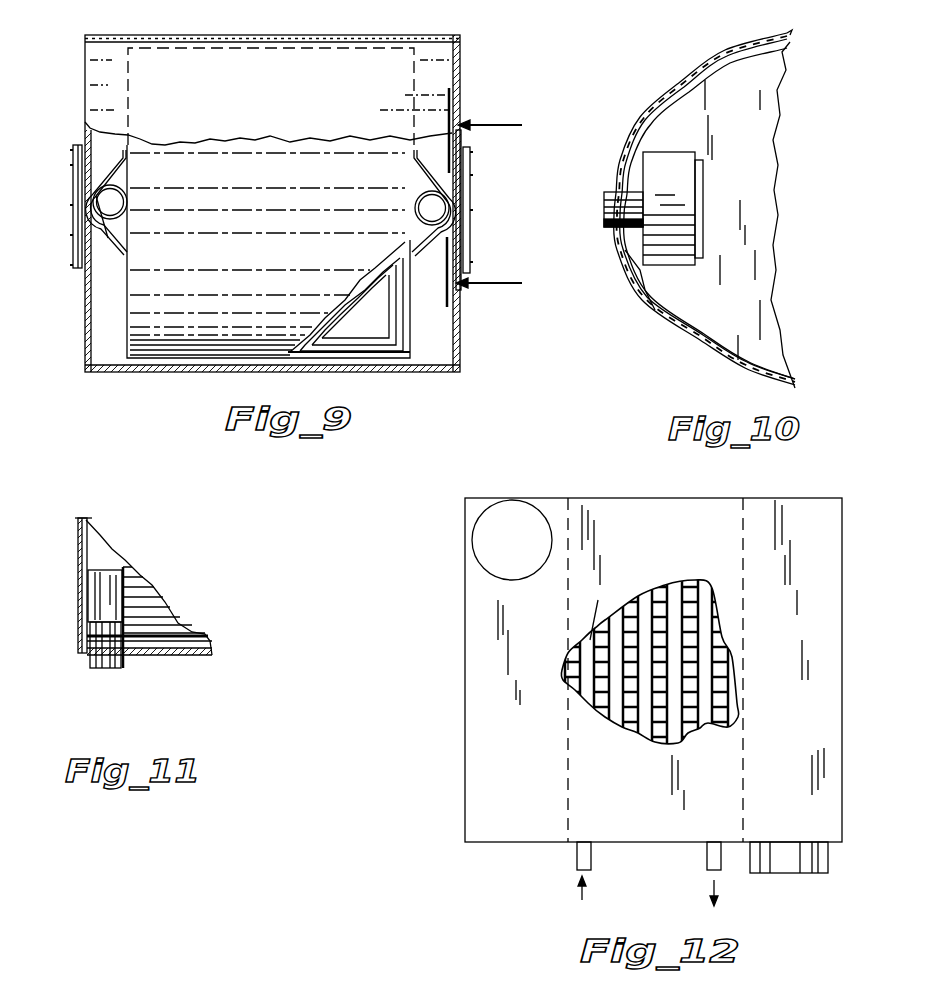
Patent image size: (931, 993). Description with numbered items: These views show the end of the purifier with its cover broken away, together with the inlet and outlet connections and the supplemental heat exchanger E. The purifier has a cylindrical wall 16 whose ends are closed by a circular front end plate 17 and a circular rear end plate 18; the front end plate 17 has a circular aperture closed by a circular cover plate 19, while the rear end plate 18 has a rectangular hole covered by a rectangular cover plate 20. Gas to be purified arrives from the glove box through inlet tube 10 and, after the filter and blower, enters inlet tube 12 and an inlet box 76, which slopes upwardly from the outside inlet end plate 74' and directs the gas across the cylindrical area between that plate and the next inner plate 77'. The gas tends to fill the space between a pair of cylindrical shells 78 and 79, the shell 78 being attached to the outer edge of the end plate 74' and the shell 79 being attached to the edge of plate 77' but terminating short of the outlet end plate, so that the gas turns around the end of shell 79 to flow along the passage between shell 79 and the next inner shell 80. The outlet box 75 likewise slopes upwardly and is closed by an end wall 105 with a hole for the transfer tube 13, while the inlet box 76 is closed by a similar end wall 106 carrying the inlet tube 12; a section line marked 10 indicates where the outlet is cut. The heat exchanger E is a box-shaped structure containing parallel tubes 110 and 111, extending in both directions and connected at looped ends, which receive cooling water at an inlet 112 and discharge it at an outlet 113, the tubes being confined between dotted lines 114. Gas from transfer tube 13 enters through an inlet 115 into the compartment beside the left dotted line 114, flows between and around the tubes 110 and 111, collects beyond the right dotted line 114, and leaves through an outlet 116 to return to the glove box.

In FIG. 9, the inlet tube 10 is at (484, 197).
In FIG. 9, the inlet tube 12 is at (420, 192).
In FIG. 10, the inlet tube 12 is at (612, 230).
In FIG. 9, the transfer tube 13 is at (118, 205).
In FIG. 11, the transfer tube 13 is at (110, 668).
In FIG. 9, the cylindrical wall 16 is at (298, 92).
In FIG. 10, the cylindrical wall 16 is at (662, 336).
In FIG. 11, the cylindrical wall 16 is at (188, 655).
In FIG. 9, the front end plate 17 is at (84, 356).
In FIG. 11, the front end plate 17 is at (88, 537).
In FIG. 9, the rear end plate 18 is at (445, 312).
In FIG. 9, the circular cover plate 19 is at (72, 255).
In FIG. 9, the rectangular cover plate 20 is at (472, 184).
In FIG. 9, the outside inlet end plate 74' is at (401, 315).
In FIG. 10, the outside inlet end plate 74' is at (655, 280).
In FIG. 9, the outlet box 75 is at (470, 240).
In FIG. 10, the outlet box 75 is at (685, 195).
In FIG. 9, the inlet box 76 is at (110, 238).
In FIG. 11, the inlet box 76 is at (112, 565).
In FIG. 9, the next inner plate 77' is at (409, 307).
In FIG. 9, the cylindrical shell 78 is at (286, 182).
In FIG. 11, the cylindrical shell 78 is at (145, 600).
In FIG. 9, the cylindrical shell 79 is at (372, 370).
In FIG. 9, the next inner shell 80 is at (350, 368).
In FIG. 9, the end wall 105 is at (400, 228).
In FIG. 9, the end wall 106 is at (122, 230).
In FIG. 12, the parallel tubes 110 is at (715, 672).
In FIG. 12, the parallel tubes 111 is at (688, 590).
In FIG. 12, the inlet 112 is at (576, 858).
In FIG. 12, the outlet 113 is at (706, 858).
In FIG. 12, the dotted lines 114 is at (566, 771).
In FIG. 12, the inlet 115 is at (505, 528).
In FIG. 12, the outlet 116 is at (800, 873).
In FIG. 12, the supplemental heat exchanger E is at (845, 706).